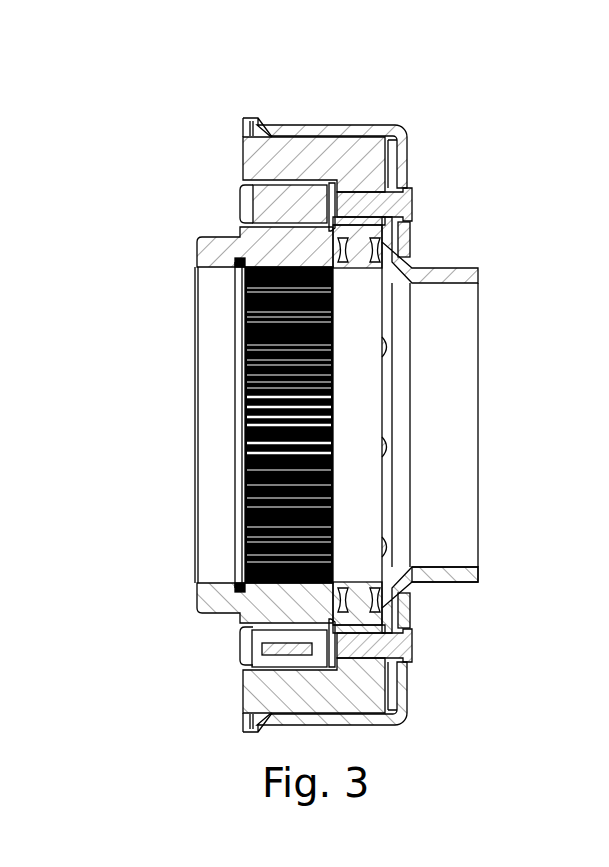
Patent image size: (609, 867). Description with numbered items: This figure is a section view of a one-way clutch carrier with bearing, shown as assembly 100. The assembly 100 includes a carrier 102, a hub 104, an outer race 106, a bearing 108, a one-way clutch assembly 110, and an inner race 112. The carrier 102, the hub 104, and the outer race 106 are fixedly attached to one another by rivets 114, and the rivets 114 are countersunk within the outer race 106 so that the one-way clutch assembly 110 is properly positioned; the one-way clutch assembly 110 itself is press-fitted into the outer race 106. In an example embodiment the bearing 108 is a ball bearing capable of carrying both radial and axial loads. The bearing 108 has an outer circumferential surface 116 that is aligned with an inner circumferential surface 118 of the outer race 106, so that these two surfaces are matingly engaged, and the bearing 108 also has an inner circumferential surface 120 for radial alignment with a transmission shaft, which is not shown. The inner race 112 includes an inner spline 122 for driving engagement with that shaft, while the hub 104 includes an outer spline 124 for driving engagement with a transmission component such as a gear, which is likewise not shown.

The assembly 100 is at (432, 96).
The carrier 102 is at (408, 137).
The hub 104 is at (480, 270).
The outer race 106 is at (252, 150).
The bearing 108 is at (377, 242).
The one-way clutch assembly 110 is at (252, 200).
The inner race 112 is at (207, 250).
The rivets 114 is at (405, 200).
The outer circumferential surface 116 is at (407, 652).
The inner circumferential surface 118 is at (367, 618).
The inner circumferential surface 120 is at (383, 287).
The inner spline 122 is at (262, 565).
The outer spline 124 is at (478, 582).